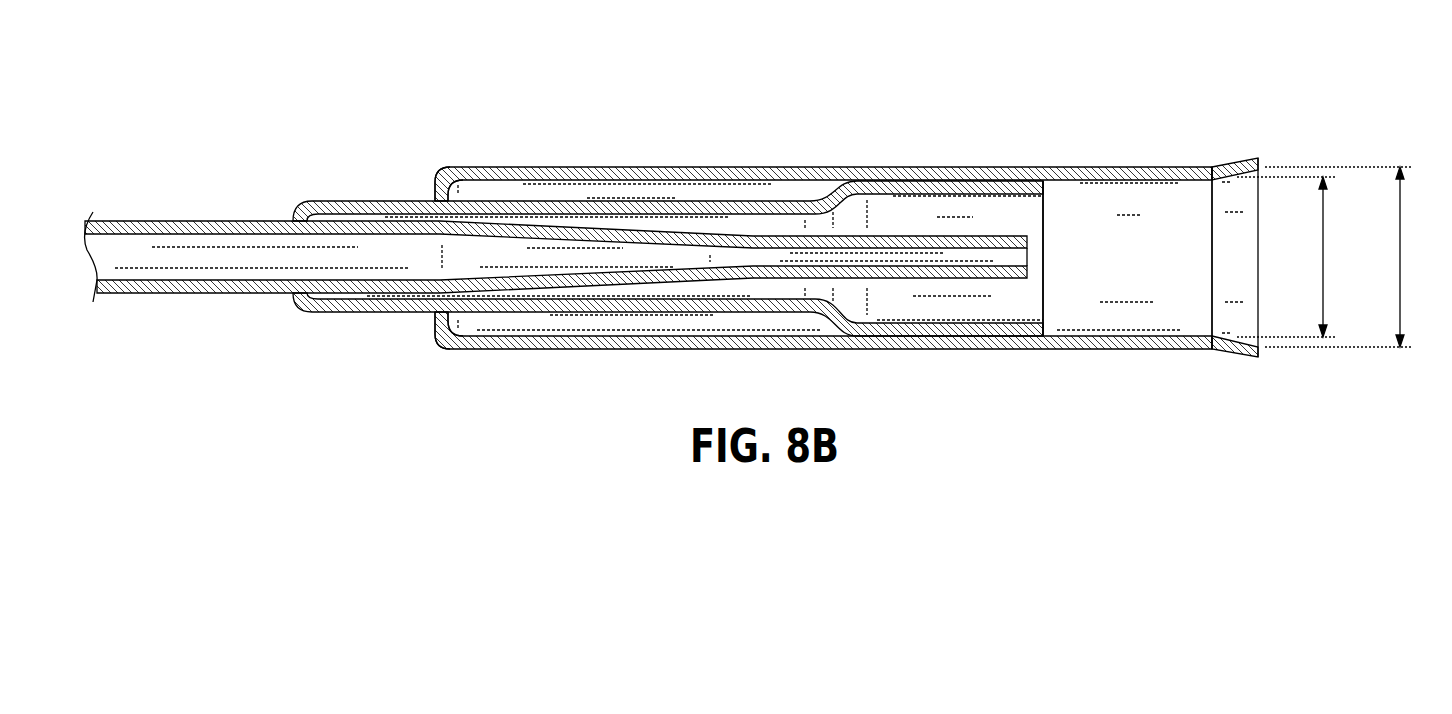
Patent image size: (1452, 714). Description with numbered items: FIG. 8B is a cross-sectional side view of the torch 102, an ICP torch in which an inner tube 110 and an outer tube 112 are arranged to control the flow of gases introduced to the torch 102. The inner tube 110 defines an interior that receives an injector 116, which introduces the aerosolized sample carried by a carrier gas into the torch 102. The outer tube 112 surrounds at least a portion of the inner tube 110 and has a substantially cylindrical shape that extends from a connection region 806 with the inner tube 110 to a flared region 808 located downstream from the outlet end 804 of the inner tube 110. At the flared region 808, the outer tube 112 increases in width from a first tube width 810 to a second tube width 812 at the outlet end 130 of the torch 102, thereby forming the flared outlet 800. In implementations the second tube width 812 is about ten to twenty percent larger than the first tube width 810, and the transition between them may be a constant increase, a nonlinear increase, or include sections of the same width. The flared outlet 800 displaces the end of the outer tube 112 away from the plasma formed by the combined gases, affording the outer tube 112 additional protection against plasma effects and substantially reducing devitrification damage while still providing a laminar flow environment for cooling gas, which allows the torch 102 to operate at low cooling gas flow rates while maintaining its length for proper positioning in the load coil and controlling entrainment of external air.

The torch 102 is at (584, 66).
The injector 116 is at (177, 221).
The inner tube 110 is at (338, 201).
The outer tube 112 is at (630, 167).
The connection region 806 is at (414, 177).
The outlet end of the inner tube 804 is at (1068, 208).
The flared region 808 is at (1210, 150).
The flared outlet 800 is at (1243, 160).
The outlet end 130 is at (1258, 258).
The first tube width 810 is at (1307, 257).
The second tube width 812 is at (1358, 257).